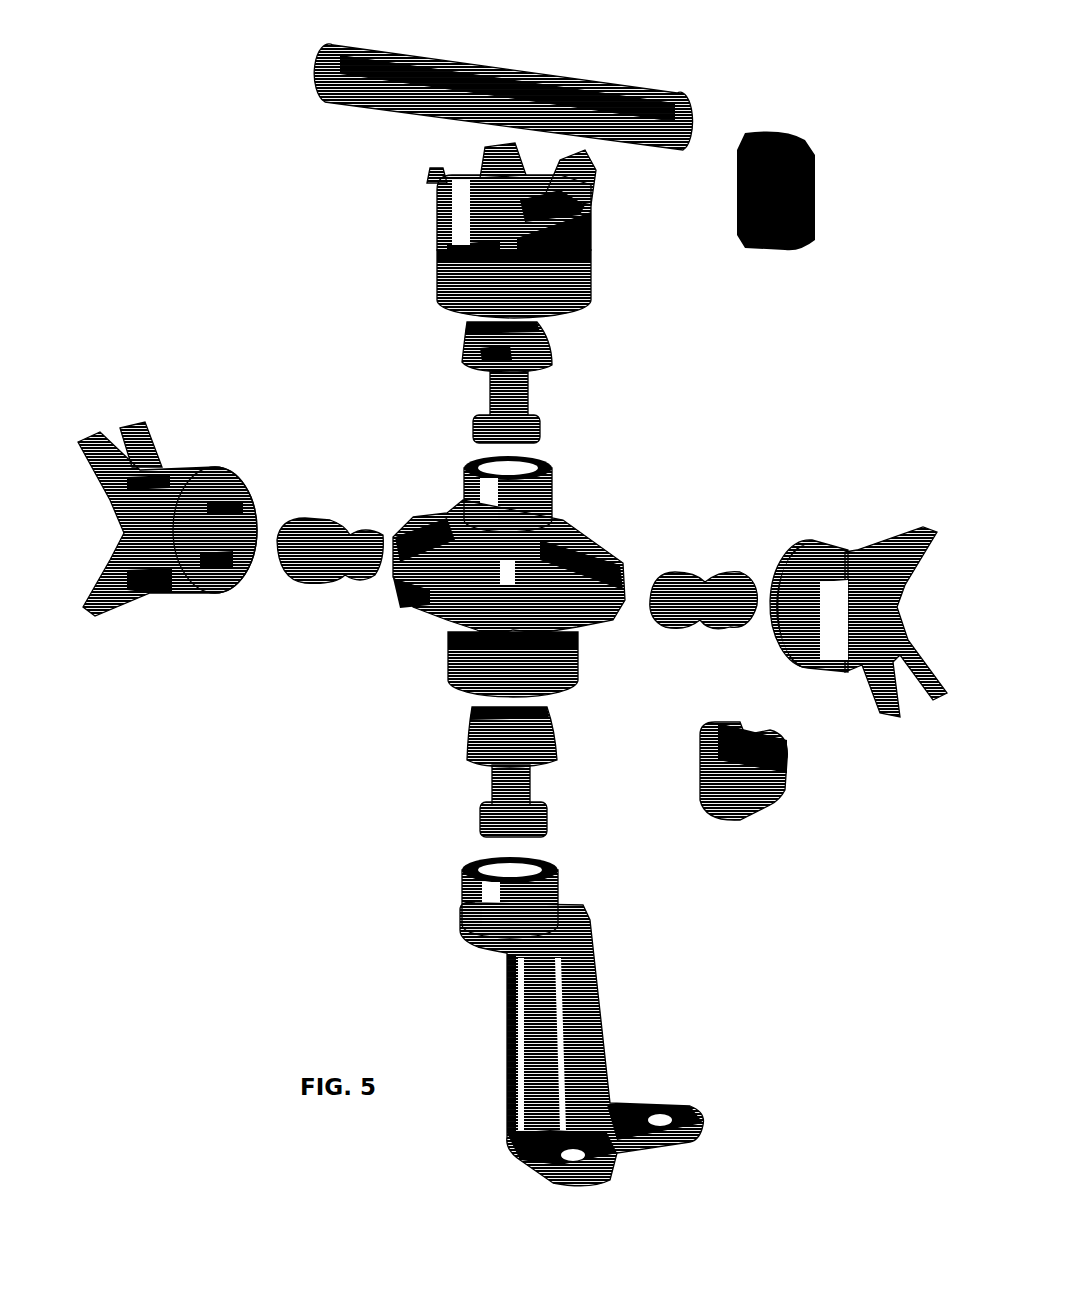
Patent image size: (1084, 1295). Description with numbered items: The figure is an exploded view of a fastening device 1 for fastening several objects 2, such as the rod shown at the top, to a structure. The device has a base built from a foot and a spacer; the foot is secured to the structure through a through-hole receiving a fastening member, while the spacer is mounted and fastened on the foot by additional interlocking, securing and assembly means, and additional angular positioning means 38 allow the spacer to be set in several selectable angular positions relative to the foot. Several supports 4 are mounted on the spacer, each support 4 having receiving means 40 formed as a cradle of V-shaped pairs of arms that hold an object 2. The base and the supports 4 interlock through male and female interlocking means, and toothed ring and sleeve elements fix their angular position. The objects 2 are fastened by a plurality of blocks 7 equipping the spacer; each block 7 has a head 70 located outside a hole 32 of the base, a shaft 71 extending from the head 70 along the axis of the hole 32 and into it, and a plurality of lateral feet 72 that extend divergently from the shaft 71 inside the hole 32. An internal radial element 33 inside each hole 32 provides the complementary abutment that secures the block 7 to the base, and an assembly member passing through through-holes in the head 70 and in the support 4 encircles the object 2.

The fastening device 1 is at (175, 70).
The object 2 is at (338, 55).
The support 4 is at (430, 218).
The block 7 is at (550, 387).
The hole 32 is at (597, 577).
The internal radial element 33 is at (493, 463).
The additional angular positioning means 38 is at (453, 892).
The receiving means 40 is at (557, 175).
The head 70 is at (463, 353).
The shaft 71 is at (490, 392).
The lateral feet 72 is at (541, 427).